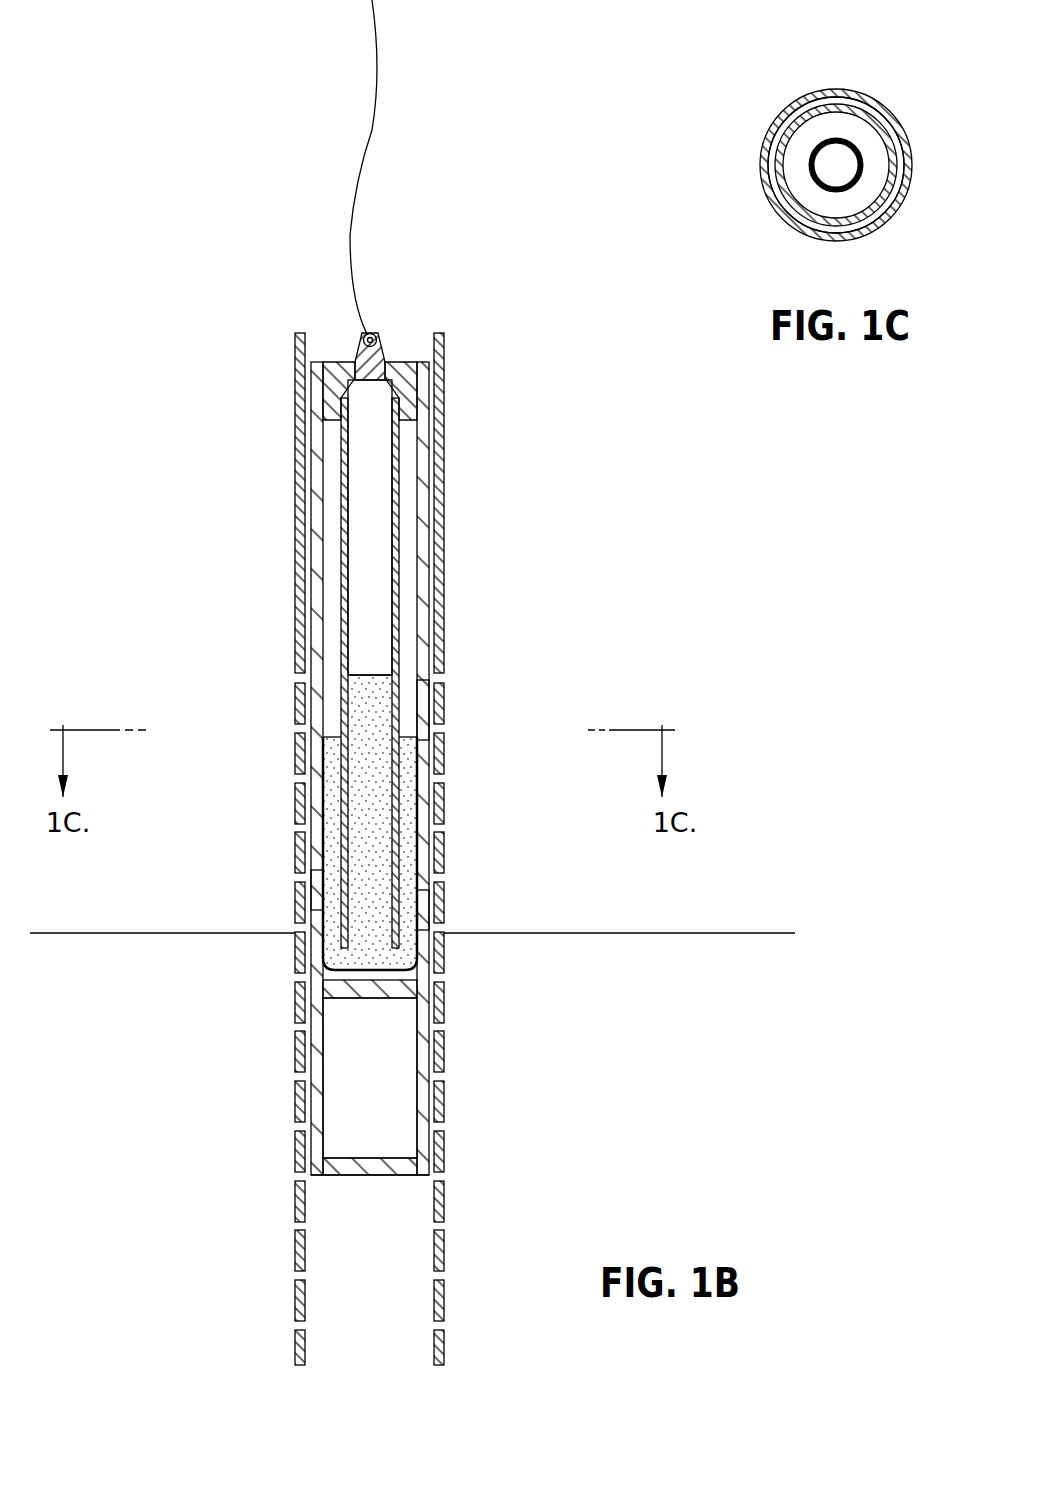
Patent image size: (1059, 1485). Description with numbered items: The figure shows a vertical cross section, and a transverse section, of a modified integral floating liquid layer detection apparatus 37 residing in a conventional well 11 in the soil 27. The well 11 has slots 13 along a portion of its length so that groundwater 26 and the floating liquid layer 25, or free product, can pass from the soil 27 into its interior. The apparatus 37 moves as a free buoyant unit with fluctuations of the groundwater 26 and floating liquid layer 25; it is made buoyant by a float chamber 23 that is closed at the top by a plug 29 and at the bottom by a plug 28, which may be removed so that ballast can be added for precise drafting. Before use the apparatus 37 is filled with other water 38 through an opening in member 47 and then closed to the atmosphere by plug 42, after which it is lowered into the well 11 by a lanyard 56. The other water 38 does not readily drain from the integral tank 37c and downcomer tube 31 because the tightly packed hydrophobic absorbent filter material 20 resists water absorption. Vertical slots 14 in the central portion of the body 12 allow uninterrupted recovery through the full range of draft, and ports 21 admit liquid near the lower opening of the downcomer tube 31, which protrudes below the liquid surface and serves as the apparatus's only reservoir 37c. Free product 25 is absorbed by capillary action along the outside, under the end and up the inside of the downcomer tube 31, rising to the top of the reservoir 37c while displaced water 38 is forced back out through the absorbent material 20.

In FIG. 1B, the well 11 is at (443, 623).
In FIG. 1C, the well 11 is at (873, 108).
In FIG. 1B, the body 12 is at (425, 705).
In FIG. 1C, the body 12 is at (887, 200).
In FIG. 1B, the slots 13 is at (443, 882).
In FIG. 1B, the vertical slots 14 is at (318, 890).
In FIG. 1C, the vertical slots 14 is at (803, 227).
In FIG. 1B, the hydrophobic absorbent filter material 20 is at (325, 790).
In FIG. 1B, the ports 21 is at (417, 810).
In FIG. 1B, the float chamber 23 is at (385, 1108).
In FIG. 1B, the floating liquid layer 25 is at (82, 912).
In FIG. 1B, the groundwater 26 is at (118, 1146).
In FIG. 1B, the soil 27 is at (80, 691).
In FIG. 1B, the plug 28 is at (407, 1175).
In FIG. 1B, the plug 29 is at (367, 998).
In FIG. 1B, the downcomer tube 31 is at (342, 641).
In FIG. 1C, the downcomer tube 31 is at (828, 136).
In FIG. 1B, the integral floating liquid layer detection apparatus 37 is at (163, 443).
In FIG. 1B, the integral tank 37c is at (350, 558).
In FIG. 1B, the other water 38 is at (375, 605).
In FIG. 1B, the plug 42 is at (383, 335).
In FIG. 1B, the member 47 is at (395, 380).
In FIG. 1B, the lanyard 56 is at (357, 167).